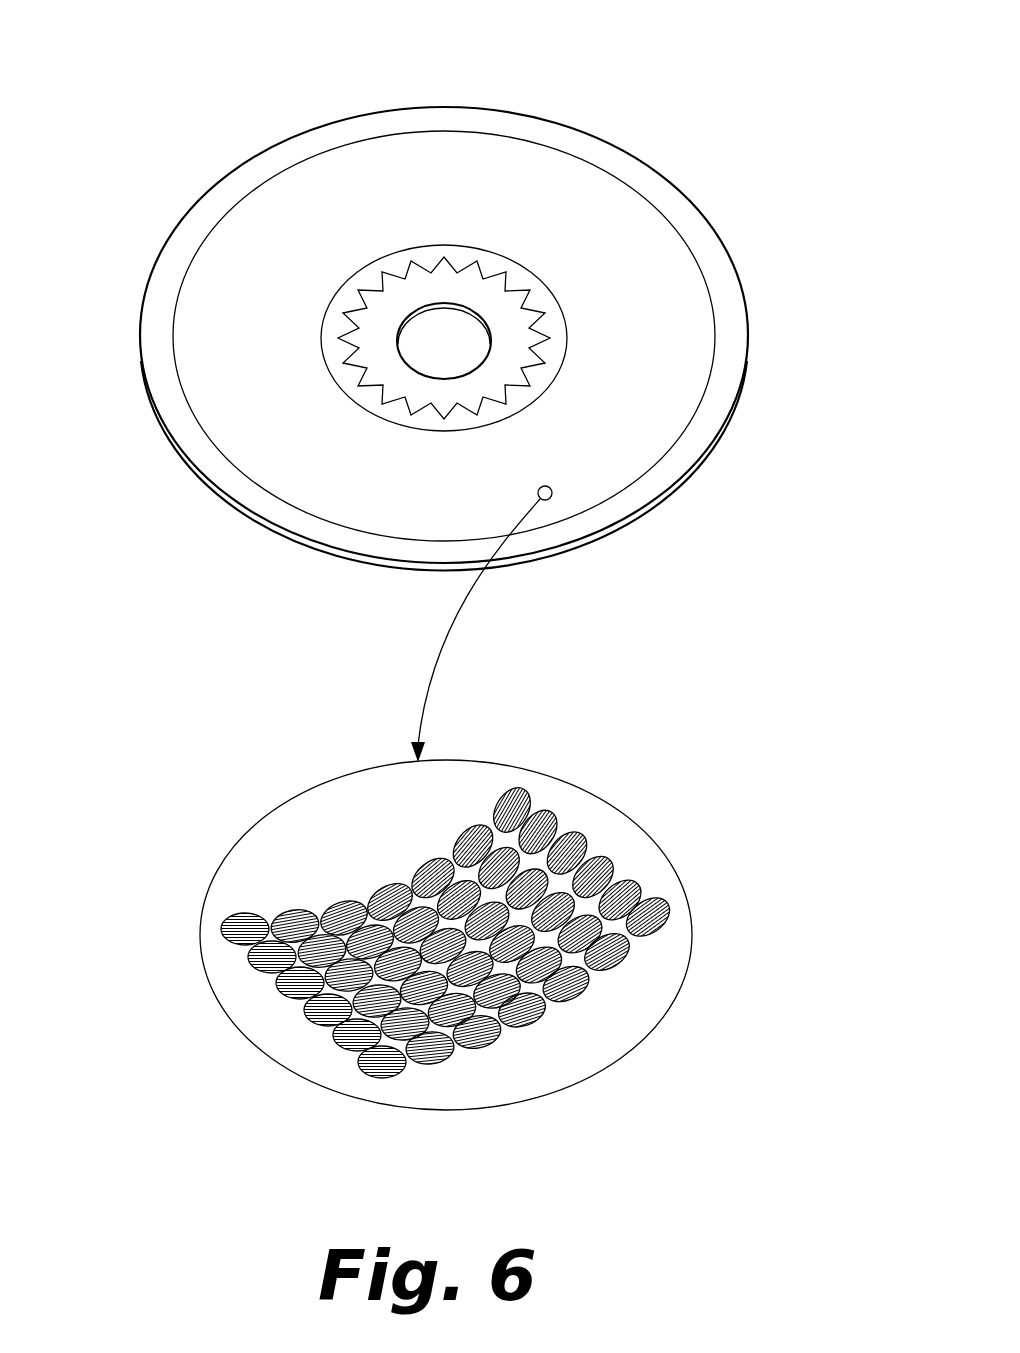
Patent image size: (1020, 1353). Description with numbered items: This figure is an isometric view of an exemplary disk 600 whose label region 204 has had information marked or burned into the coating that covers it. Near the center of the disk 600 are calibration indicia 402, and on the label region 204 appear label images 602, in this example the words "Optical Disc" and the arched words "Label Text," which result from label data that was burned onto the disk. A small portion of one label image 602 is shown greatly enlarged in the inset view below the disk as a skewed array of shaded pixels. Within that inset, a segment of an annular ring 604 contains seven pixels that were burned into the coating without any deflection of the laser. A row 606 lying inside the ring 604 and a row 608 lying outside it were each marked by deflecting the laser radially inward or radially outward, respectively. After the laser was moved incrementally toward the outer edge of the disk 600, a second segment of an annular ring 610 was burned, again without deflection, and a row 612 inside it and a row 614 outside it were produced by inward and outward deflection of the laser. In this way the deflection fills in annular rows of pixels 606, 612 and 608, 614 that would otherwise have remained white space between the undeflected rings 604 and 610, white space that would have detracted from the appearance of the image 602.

The disk 600 is at (190, 102).
The label images 602 is at (417, 152).
The label region 204 is at (233, 307).
The calibration indicia 402 is at (505, 280).
The annular ring 604 is at (555, 803).
The row 606 is at (525, 790).
The row 608 is at (582, 823).
The annular ring 610 is at (333, 1047).
The row 612 is at (302, 1020).
The row 614 is at (362, 1078).